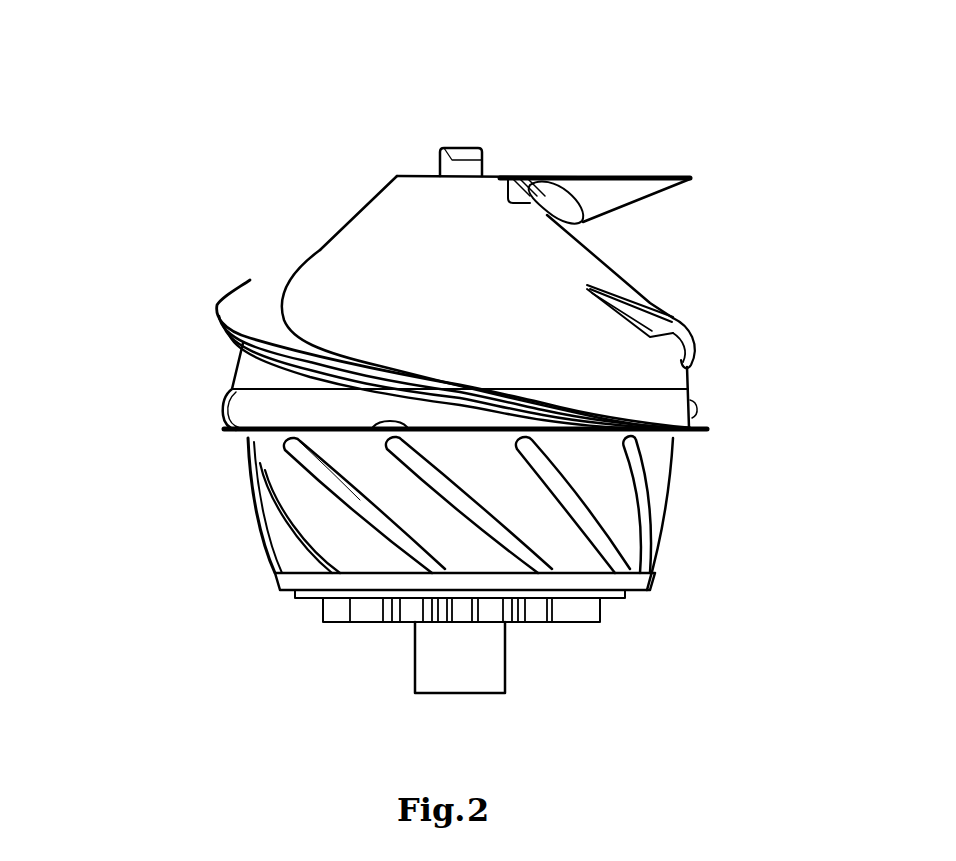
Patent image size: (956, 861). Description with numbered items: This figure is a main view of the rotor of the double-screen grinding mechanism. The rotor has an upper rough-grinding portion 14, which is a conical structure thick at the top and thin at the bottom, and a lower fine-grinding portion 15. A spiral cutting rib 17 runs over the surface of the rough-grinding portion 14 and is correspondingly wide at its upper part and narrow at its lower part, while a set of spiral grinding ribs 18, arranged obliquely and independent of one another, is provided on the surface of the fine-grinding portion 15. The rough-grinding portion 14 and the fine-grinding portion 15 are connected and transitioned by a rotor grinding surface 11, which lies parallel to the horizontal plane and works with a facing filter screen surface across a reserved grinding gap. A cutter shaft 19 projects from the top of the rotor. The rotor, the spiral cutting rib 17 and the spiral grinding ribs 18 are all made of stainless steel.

The rough-grinding portion 14 is at (392, 252).
The cutter shaft 19 is at (448, 150).
The spiral cutting rib 17 is at (250, 302).
The spiral grinding rib 18 is at (290, 457).
The fine-grinding portion 15 is at (315, 523).
The rotor grinding surface 11 is at (690, 430).